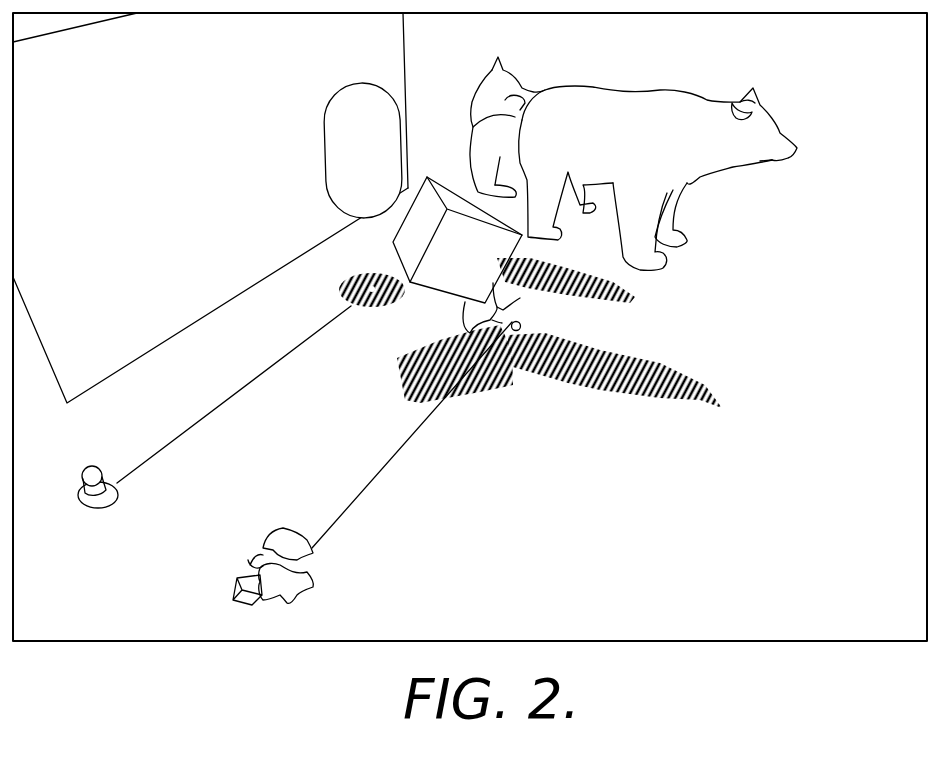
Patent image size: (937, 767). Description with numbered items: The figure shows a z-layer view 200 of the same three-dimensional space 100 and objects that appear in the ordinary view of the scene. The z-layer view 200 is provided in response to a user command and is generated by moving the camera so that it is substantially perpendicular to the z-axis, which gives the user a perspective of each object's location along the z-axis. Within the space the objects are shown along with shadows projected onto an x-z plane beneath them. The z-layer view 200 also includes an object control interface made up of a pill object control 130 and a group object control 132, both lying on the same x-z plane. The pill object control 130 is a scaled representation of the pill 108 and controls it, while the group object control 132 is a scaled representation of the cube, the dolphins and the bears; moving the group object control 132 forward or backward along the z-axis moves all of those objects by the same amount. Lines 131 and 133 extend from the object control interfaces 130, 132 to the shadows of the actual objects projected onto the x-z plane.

The 3-D space 100 is at (740, 260).
The pill 108 is at (325, 136).
The pill object control 130 is at (82, 481).
The line of sight 131 is at (247, 383).
The group object control 132 is at (233, 590).
The line of sight 133 is at (400, 452).
The z-layer view 200 is at (727, 672).